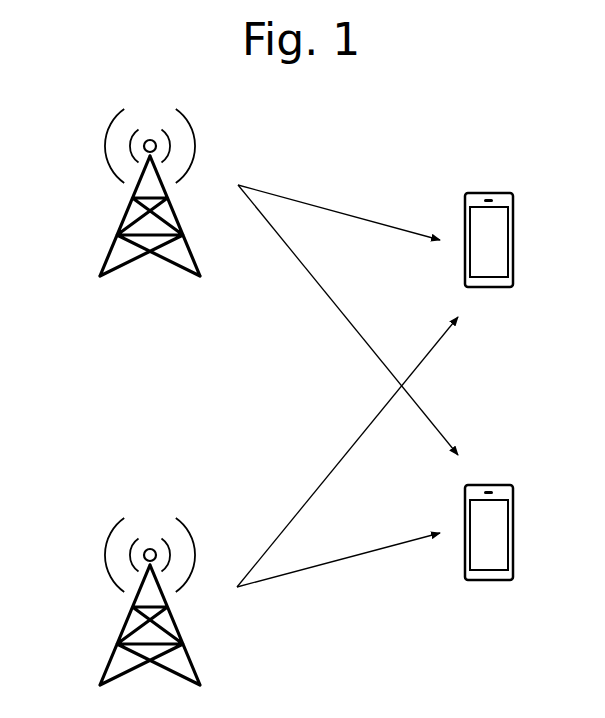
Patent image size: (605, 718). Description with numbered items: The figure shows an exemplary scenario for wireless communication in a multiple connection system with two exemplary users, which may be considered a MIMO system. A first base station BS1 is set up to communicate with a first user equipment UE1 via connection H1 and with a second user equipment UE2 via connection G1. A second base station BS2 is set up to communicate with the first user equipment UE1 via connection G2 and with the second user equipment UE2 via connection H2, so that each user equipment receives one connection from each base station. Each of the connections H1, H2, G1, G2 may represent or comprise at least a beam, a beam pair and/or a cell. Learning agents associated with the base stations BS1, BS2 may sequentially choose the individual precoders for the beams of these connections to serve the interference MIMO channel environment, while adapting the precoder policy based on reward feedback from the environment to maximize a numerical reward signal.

The first base station BS1 is at (111, 192).
The second base station BS2 is at (111, 601).
The first user equipment UE1 is at (525, 240).
The second user equipment UE2 is at (524, 532).
The connection H1 is at (339, 209).
The connection H2 is at (338, 569).
The connection G1 is at (348, 320).
The connection G2 is at (347, 452).